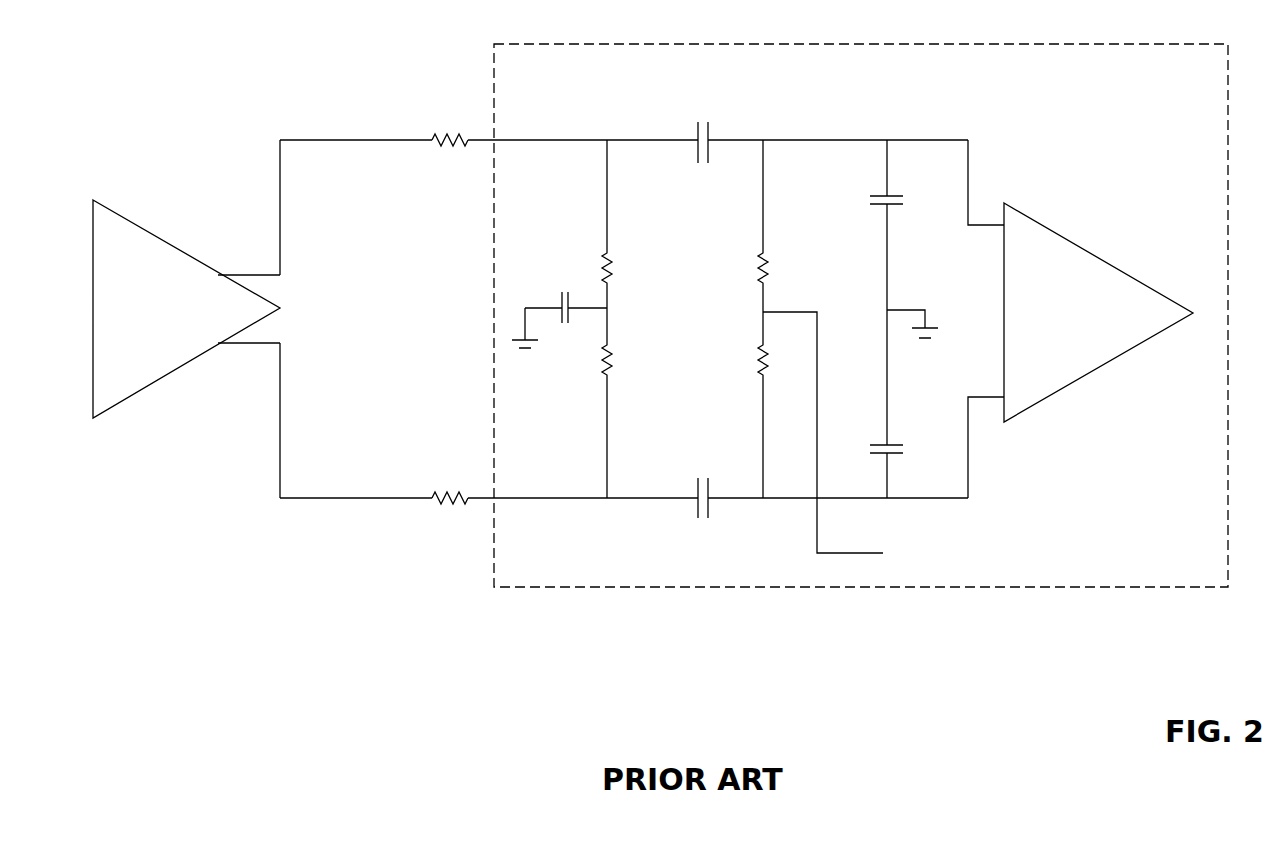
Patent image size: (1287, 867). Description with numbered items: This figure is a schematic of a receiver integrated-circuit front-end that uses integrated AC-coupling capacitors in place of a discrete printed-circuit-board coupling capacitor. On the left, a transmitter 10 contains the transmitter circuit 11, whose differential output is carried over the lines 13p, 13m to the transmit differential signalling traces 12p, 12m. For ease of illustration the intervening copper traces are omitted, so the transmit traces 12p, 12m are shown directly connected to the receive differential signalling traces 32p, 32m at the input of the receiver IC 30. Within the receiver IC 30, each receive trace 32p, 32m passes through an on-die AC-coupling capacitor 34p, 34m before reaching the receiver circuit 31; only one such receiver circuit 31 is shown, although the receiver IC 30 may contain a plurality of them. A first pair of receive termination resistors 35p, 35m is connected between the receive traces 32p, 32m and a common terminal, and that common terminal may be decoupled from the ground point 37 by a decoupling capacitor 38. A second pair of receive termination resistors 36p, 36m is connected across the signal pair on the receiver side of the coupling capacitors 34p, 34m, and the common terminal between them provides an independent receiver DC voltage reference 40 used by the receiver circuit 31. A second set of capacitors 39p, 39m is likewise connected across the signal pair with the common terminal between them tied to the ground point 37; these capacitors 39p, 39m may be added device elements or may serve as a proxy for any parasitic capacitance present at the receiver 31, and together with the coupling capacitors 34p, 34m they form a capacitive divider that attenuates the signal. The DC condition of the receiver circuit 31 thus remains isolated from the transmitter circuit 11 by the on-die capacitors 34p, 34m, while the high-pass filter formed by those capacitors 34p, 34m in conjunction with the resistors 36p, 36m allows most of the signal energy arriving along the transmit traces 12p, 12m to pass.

The transmitter 10 is at (362, 319).
The transmitter circuit Tx 11 is at (186, 309).
The transmit differential signalling trace Txp 12p is at (455, 145).
The transmit differential signalling trace Txm 12m is at (456, 503).
The positive signal line 13p is at (373, 140).
The negative signal line 13m is at (378, 498).
The receiver IC 30 is at (861, 315).
The receiver circuit Rx 31 is at (1080, 319).
The receive differential signalling trace Rxp 32p is at (593, 140).
The receive differential signalling trace Rxm 32m is at (588, 498).
The integrated AC-coupling capacitor C1p 34p is at (712, 137).
The integrated AC-coupling capacitor C1m 34m is at (694, 490).
The receive termination resistor R1p 35p is at (612, 258).
The receive termination resistor R1m 35m is at (612, 350).
The receive termination resistor R2p 36p is at (768, 258).
The receive termination resistor R2m 36m is at (760, 332).
The ground point GND 37 is at (540, 346).
The decoupling capacitor Ccm 38 is at (558, 300).
The capacitor C2p 39p is at (872, 197).
The capacitor C2m 39m is at (893, 445).
The receiver DC voltage reference VcmRef 40 is at (855, 553).